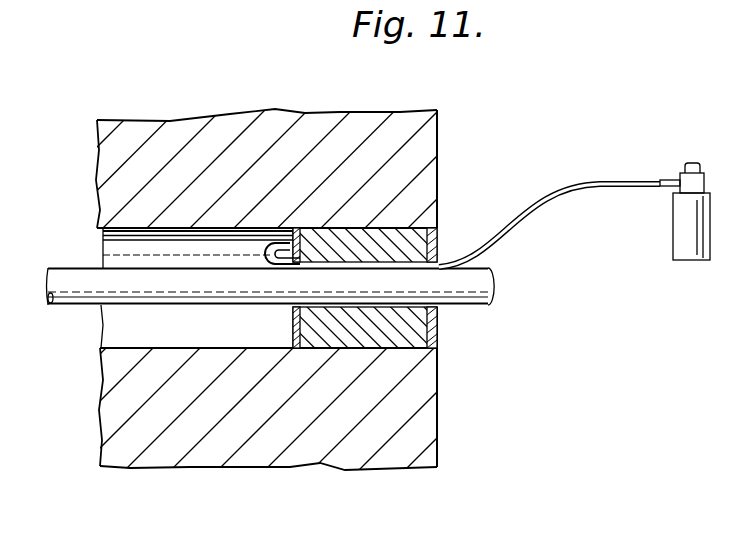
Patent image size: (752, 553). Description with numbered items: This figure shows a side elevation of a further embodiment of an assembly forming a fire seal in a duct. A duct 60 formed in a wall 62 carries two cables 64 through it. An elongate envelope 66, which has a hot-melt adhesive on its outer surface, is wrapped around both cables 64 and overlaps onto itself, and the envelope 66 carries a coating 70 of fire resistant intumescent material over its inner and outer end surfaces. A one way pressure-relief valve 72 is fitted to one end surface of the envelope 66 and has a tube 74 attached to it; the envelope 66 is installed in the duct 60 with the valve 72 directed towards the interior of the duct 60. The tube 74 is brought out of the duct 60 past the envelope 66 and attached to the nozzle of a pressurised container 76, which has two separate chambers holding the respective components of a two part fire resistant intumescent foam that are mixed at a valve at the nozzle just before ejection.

The duct 60 is at (158, 245).
The wall 62 is at (272, 135).
The cables 64 is at (70, 295).
The elongate envelope 66 is at (362, 337).
The coating 70 is at (292, 326).
The pressure-relief valve 72 is at (300, 245).
The tube 74 is at (573, 204).
The pressurised container 76 is at (690, 247).